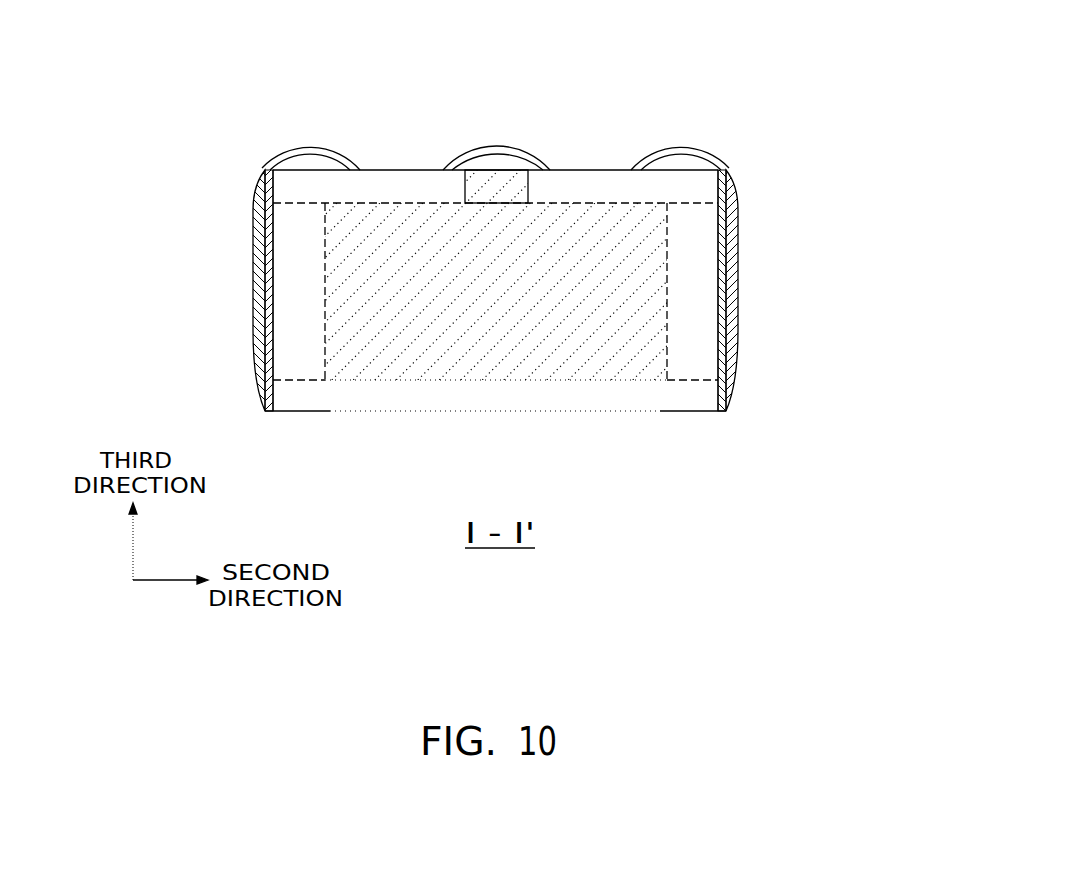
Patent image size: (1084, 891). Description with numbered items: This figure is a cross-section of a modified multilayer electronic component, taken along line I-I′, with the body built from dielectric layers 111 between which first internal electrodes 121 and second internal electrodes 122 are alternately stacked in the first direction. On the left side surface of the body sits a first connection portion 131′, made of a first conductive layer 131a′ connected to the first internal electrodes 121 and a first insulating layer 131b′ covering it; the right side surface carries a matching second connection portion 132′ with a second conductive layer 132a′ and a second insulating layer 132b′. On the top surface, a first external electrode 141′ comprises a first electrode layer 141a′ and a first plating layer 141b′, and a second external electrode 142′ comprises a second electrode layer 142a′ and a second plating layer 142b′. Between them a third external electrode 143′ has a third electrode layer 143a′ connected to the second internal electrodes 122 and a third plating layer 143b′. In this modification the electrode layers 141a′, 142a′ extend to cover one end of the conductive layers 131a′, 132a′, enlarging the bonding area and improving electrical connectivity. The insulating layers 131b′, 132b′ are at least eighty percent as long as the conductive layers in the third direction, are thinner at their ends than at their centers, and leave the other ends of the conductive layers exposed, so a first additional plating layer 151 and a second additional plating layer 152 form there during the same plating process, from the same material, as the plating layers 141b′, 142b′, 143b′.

The dielectric layer 111 is at (368, 176).
The first internal electrode 121 is at (299, 236).
The second internal electrode 122 is at (611, 228).
The first connection portion 131′ is at (171, 290).
The first conductive layer 131a′ is at (256, 245).
The first insulating layer 131b′ is at (253, 302).
The second connection portion 132′ is at (826, 290).
The second conductive layer 132a′ is at (737, 247).
The second insulating layer 132b′ is at (738, 305).
The first external electrode 141′ is at (219, 143).
The first electrode layer 141a′ is at (270, 160).
The first plating layer 141b′ is at (290, 148).
The second external electrode 142′ is at (771, 144).
The second electrode layer 142a′ is at (721, 160).
The second plating layer 142b′ is at (701, 148).
The third external electrode 143′ is at (426, 199).
The third electrode layer 143a′ is at (463, 166).
The third plating layer 143b′ is at (473, 154).
The first additional plating layer 151 is at (262, 406).
The second additional plating layer 152 is at (729, 406).